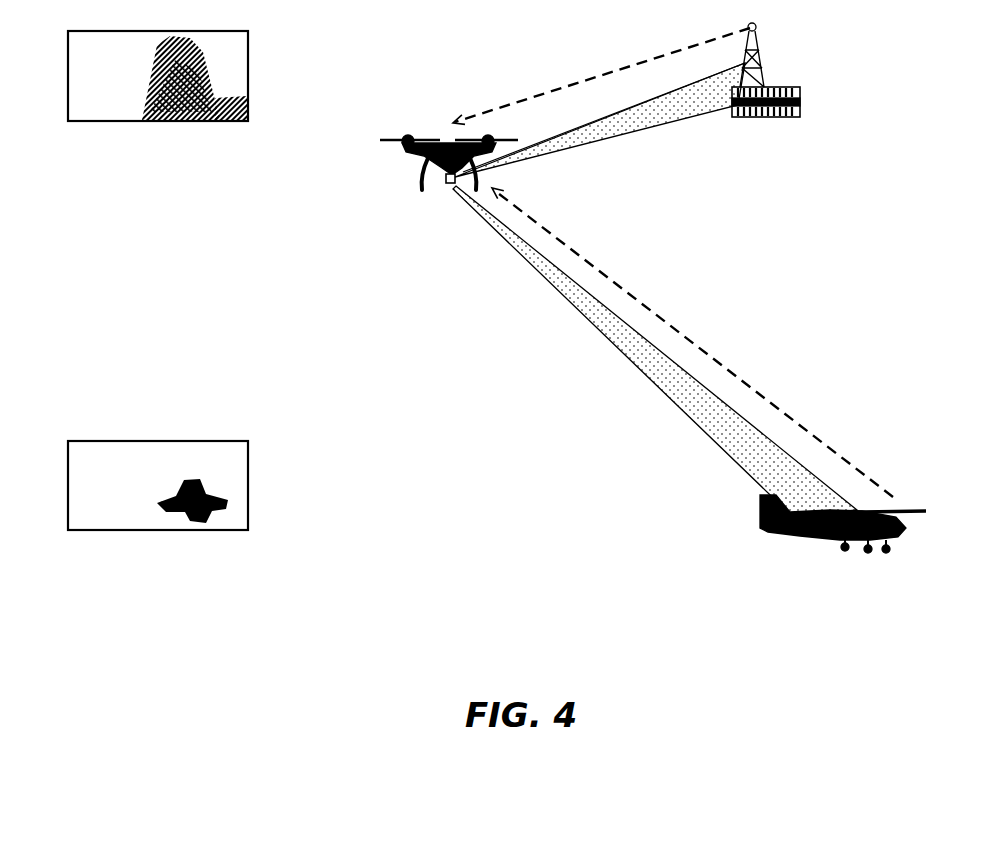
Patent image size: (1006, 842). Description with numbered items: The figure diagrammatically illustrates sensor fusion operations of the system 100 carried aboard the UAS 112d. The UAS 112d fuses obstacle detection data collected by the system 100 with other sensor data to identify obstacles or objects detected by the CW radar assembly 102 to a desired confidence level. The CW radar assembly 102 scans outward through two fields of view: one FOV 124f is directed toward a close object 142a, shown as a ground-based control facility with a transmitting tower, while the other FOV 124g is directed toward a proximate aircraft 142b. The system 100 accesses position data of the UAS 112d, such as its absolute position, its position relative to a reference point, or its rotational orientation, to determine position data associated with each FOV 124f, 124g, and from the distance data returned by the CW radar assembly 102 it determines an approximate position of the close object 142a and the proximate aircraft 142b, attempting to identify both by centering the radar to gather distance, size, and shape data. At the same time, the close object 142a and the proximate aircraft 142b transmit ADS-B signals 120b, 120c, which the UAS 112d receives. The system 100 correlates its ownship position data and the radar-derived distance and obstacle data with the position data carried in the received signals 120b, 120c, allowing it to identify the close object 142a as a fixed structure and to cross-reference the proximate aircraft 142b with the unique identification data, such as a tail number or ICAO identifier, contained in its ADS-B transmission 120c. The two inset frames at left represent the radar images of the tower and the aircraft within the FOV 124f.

The system 100 is at (427, 162).
The CW radar assembly 102 is at (448, 186).
The UAS 112d is at (407, 136).
The ADS-B signal 120b is at (571, 85).
The ADS-B signal 120c is at (702, 350).
The FOV 124f is at (92, 122).
The FOV 124g is at (680, 385).
The close object 142a is at (787, 86).
The proximate aircraft 142b is at (897, 537).